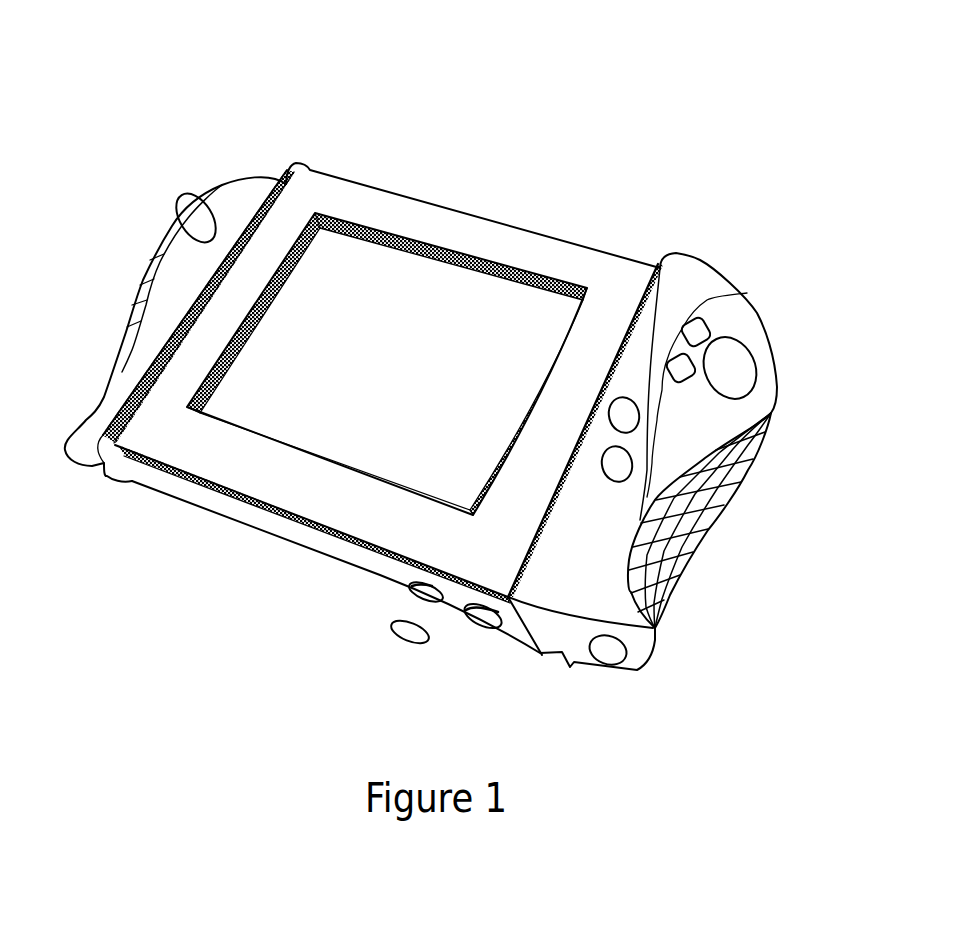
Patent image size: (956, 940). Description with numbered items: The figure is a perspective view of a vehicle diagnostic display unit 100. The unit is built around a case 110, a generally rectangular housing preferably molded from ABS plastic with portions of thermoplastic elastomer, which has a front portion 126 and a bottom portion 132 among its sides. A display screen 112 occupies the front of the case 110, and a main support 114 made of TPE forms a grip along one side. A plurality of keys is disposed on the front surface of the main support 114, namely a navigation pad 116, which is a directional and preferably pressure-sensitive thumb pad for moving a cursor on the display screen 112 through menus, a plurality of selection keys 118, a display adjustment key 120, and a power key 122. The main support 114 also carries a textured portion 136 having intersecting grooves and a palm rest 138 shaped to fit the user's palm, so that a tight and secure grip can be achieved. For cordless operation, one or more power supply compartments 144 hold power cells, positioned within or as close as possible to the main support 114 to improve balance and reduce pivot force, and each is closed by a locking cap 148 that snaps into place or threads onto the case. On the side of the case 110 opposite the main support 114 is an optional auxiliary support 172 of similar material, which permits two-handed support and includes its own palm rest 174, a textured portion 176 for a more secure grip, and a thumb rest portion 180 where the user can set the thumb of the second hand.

The vehicle diagnostic display unit 100 is at (556, 82).
The case 110 is at (533, 232).
The display screen 112 is at (385, 351).
The main support 114 is at (708, 263).
The navigation pad 116 is at (754, 362).
The selection keys 118 is at (703, 318).
The display adjustment key 120 is at (608, 415).
The power key 122 is at (602, 463).
The front portion 126 is at (369, 516).
The bottom portion 132 is at (280, 537).
The textured portion 136 is at (725, 465).
The palm rest 138 is at (748, 497).
The power supply compartment 144 is at (411, 596).
The locking cap 148 is at (408, 643).
The auxiliary support 172 is at (259, 160).
The palm rest 174 is at (134, 284).
The textured portion 176 is at (162, 267).
The thumb rest portion 180 is at (188, 222).